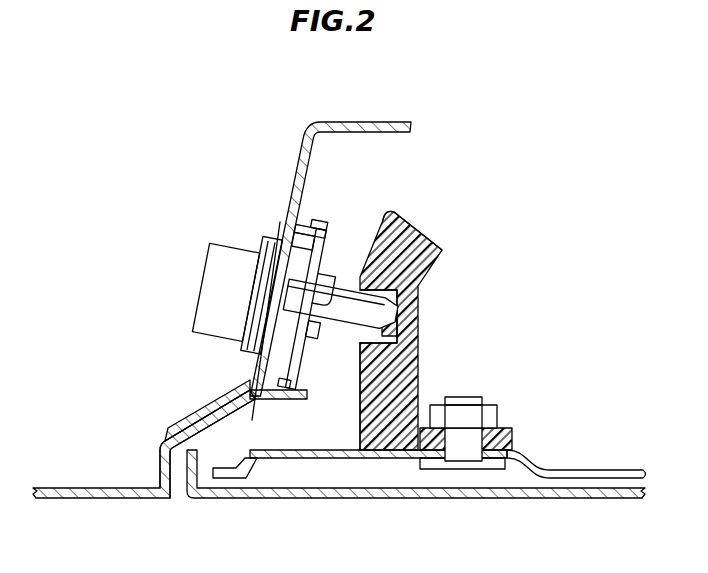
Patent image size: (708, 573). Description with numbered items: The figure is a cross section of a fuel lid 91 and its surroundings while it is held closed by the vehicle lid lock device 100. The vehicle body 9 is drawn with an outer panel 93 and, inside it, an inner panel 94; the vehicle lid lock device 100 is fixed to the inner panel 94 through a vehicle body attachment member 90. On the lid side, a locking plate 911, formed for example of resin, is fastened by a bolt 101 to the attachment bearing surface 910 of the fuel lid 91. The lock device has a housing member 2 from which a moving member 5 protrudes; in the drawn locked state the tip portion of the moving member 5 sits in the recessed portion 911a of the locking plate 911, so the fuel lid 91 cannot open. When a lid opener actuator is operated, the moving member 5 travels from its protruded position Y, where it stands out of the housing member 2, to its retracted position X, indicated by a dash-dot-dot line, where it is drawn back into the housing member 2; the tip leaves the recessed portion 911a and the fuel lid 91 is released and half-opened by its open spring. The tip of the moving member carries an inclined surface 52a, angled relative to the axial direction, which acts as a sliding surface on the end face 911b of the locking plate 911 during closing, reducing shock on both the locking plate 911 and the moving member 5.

The housing member 2 is at (252, 420).
The moving member 5 is at (390, 332).
The vehicle body 9 is at (80, 468).
The inclined surface 52a is at (360, 370).
The vehicle body attachment member 90 is at (305, 258).
The fuel lid 91 is at (483, 502).
The outer panel 93 is at (143, 493).
The inner panel 94 is at (367, 120).
The vehicle lid lock device 100 is at (260, 234).
The bolt 101 is at (487, 412).
The attachment bearing surface 910 is at (538, 462).
The locking plate 911 is at (430, 241).
The recessed portion 911a is at (397, 320).
The end face 911b is at (392, 211).
The retracted position X is at (396, 283).
The protruded position Y is at (397, 303).